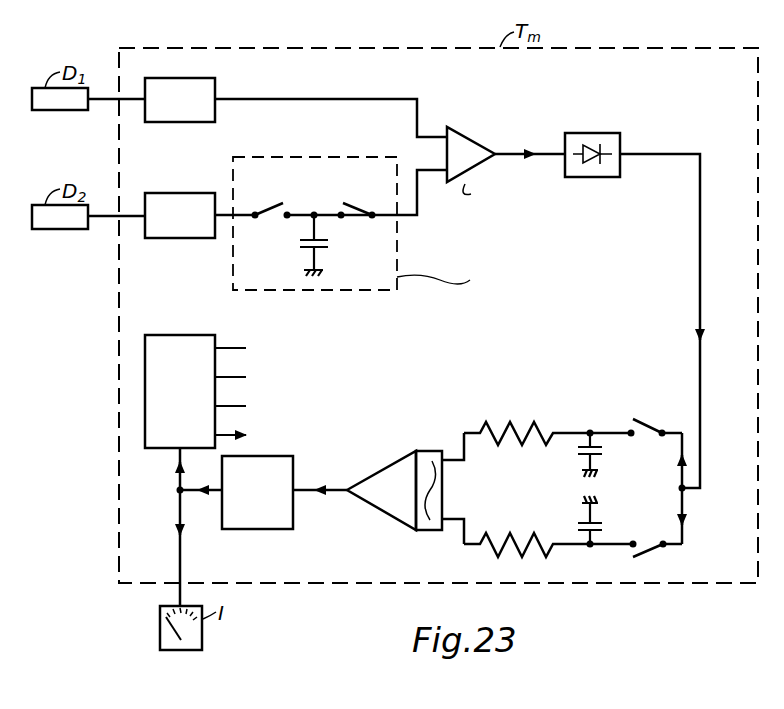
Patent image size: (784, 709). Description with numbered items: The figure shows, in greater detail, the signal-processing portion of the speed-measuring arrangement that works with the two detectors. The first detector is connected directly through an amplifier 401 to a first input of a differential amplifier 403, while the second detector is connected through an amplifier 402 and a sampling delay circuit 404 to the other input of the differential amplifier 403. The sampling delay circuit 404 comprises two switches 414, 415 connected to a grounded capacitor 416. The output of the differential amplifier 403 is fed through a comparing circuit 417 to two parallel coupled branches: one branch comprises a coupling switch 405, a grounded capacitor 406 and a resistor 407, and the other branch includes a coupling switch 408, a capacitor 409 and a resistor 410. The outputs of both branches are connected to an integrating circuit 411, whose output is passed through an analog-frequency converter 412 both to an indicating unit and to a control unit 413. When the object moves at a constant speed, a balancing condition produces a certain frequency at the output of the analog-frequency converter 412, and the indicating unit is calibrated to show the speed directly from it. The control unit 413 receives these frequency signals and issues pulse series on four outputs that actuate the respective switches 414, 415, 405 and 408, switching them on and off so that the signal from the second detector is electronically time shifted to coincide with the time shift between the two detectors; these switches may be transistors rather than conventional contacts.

The amplifier 401 is at (216, 80).
The amplifier 402 is at (203, 193).
The differential amplifier 403 is at (478, 135).
The sampling delay circuit 404 is at (392, 233).
The coupling switch 405 is at (634, 418).
The grounded capacitor 406 is at (576, 456).
The resistor 407 is at (524, 424).
The coupling switch 408 is at (637, 559).
The capacitor 409 is at (578, 524).
The resistor 410 is at (545, 551).
The integrating circuit 411 is at (393, 466).
The analog-frequency converter 412 is at (292, 458).
The control unit 413 is at (190, 336).
The switch 414 is at (296, 192).
The switch 415 is at (344, 201).
The grounded capacitor 416 is at (330, 244).
The comparing circuit 417 is at (606, 133).